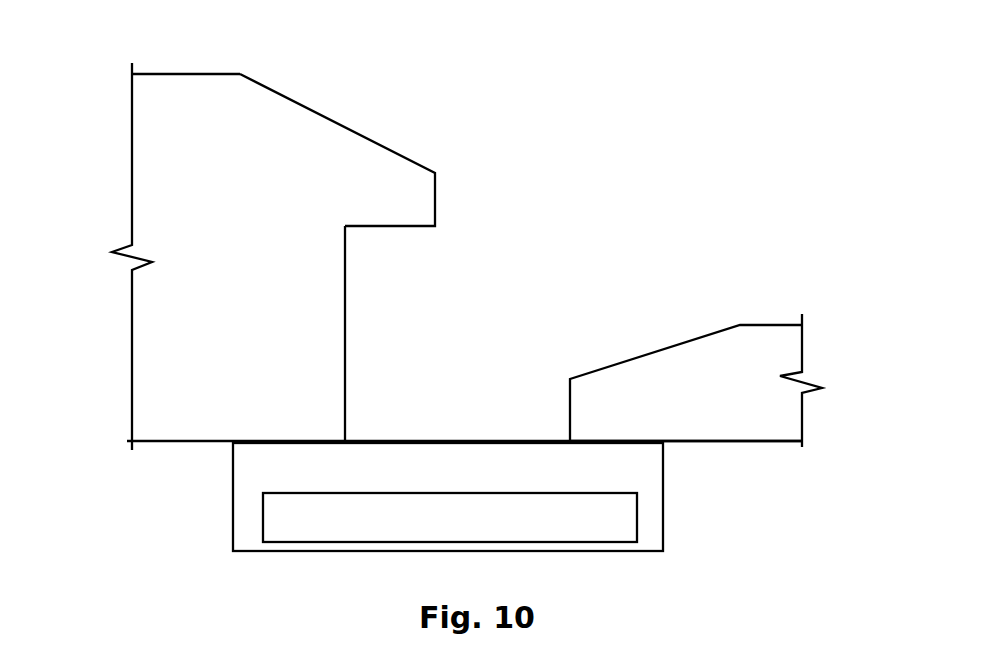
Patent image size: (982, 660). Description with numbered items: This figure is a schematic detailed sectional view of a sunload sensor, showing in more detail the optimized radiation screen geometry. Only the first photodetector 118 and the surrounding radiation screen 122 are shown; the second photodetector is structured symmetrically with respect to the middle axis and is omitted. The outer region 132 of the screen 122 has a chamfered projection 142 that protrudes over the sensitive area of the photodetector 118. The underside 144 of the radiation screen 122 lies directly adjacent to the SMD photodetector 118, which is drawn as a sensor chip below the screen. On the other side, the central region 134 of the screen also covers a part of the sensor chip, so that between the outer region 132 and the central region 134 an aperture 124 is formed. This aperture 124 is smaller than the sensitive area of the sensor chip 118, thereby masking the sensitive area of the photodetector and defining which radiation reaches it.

The first photodetector 118 is at (303, 530).
The radiation screen 122 is at (153, 347).
The aperture 124 is at (482, 410).
The outer region 132 is at (192, 73).
The central region 134 is at (782, 362).
The chamfered projection 142 is at (388, 167).
The underside 144 is at (727, 442).